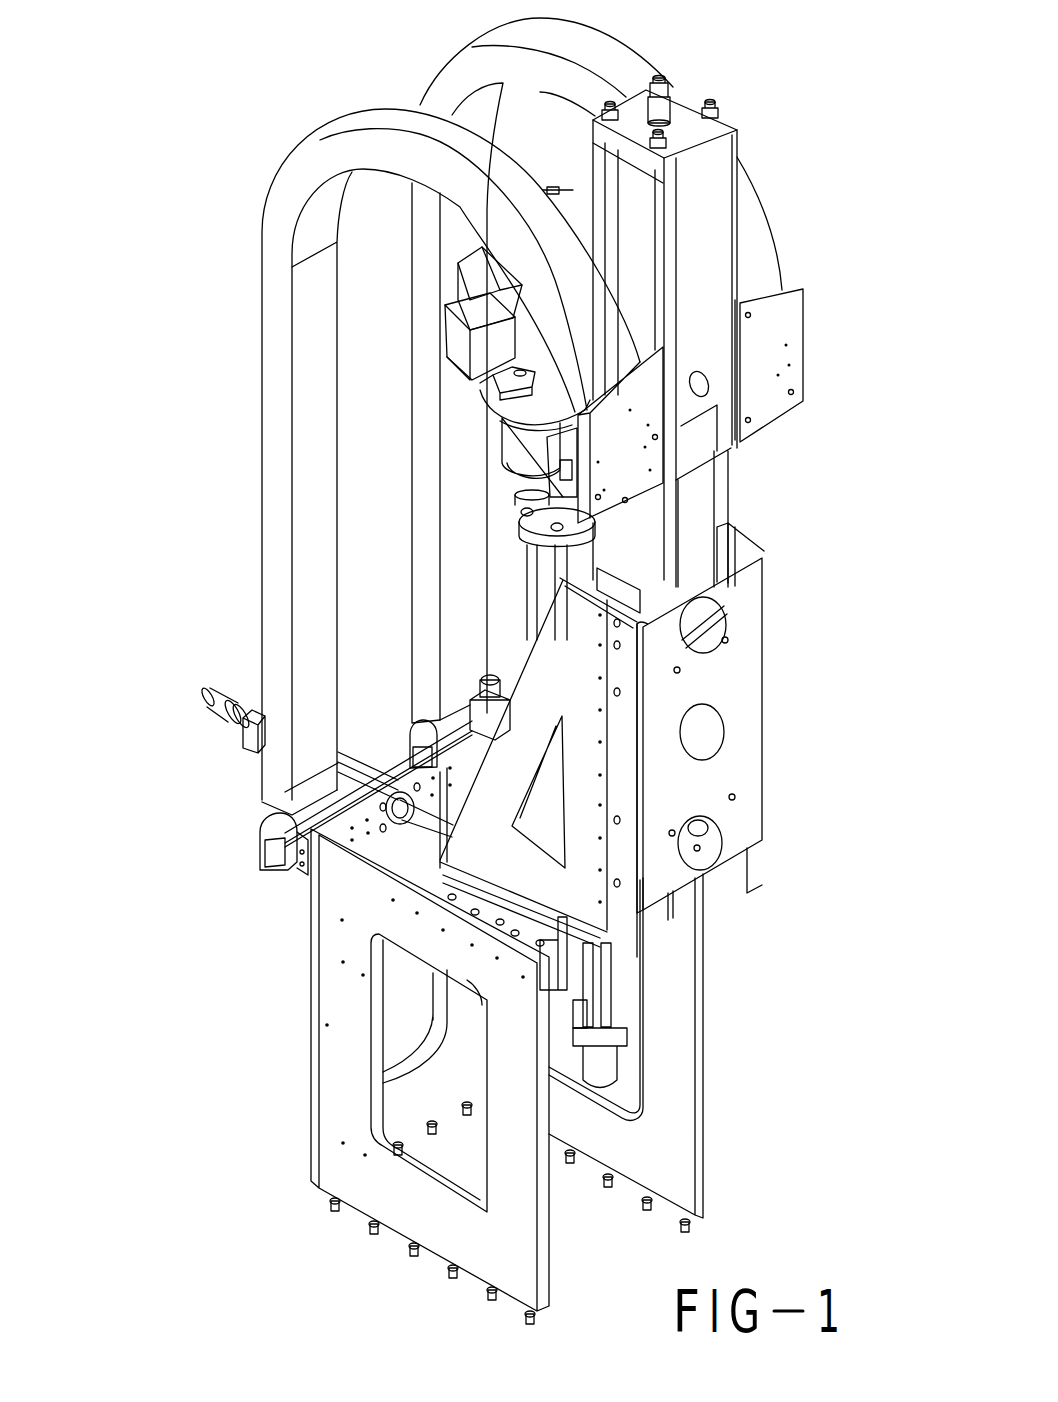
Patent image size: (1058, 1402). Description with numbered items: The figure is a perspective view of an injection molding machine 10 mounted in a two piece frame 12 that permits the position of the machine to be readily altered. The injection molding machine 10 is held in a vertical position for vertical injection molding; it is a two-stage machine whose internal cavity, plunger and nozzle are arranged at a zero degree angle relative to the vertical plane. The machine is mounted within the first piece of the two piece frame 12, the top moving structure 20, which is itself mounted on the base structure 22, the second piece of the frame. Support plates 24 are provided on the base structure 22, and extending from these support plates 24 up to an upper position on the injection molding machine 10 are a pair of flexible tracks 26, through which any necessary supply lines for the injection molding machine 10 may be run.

The injection molding machine 10 is at (688, 515).
The two piece frame 12 is at (735, 978).
The top moving structure 20 is at (727, 677).
The base structure 22 is at (342, 1067).
The support plates 24 is at (305, 858).
The flexible tracks 26 is at (275, 443).